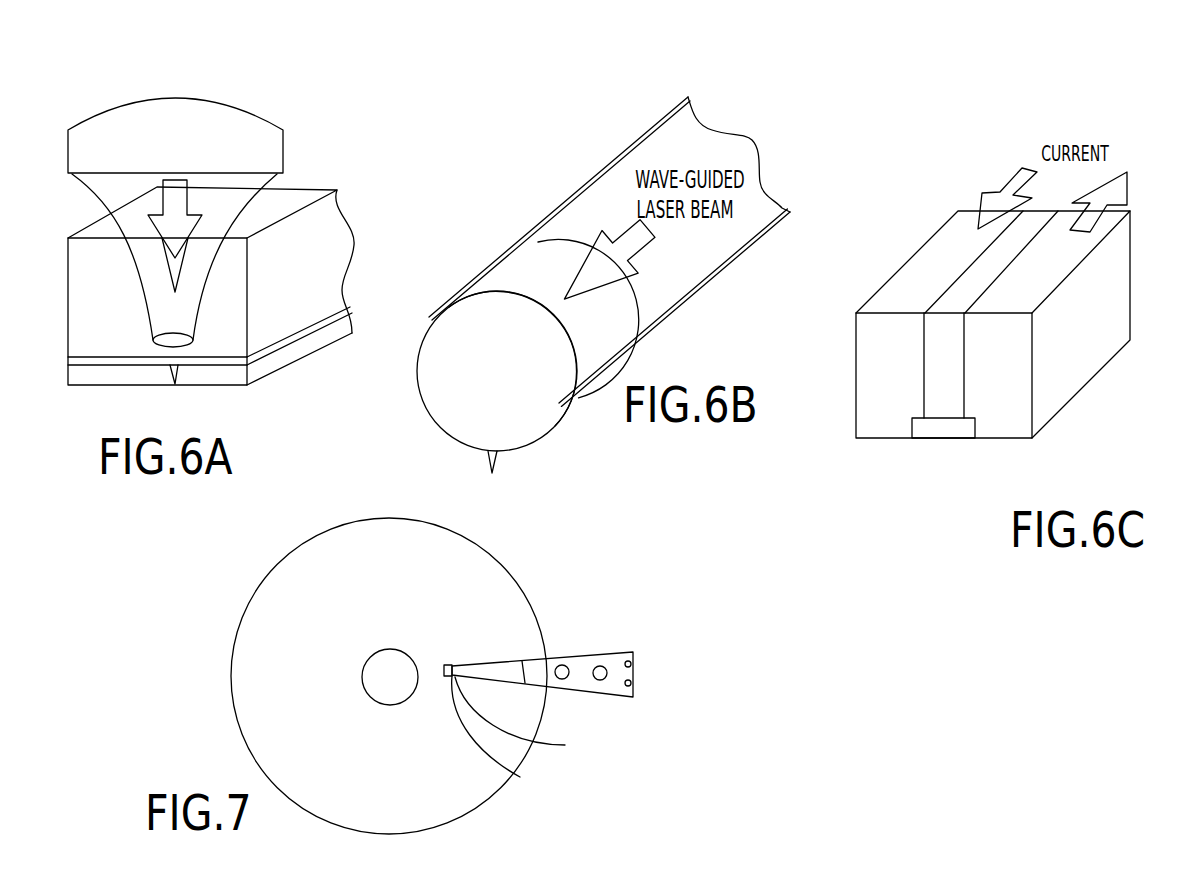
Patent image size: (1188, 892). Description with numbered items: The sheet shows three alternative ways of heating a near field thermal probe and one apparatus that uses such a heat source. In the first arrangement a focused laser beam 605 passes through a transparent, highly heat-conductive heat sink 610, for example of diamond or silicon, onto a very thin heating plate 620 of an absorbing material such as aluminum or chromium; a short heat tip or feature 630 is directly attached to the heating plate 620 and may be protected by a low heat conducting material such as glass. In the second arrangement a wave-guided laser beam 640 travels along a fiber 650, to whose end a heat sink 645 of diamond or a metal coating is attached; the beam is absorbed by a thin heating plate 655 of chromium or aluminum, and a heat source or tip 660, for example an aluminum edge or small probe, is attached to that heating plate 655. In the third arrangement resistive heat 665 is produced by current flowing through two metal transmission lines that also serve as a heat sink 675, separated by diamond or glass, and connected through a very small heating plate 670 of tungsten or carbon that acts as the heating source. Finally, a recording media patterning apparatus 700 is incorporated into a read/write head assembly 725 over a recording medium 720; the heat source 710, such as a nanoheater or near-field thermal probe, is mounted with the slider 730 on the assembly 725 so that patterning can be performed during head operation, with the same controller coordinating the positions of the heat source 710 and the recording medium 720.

In FIG. 6A, the focused laser beam 605 is at (177, 92).
In FIG. 6A, the heat sink 610 is at (98, 345).
In FIG. 6A, the heating plate 620 is at (338, 268).
In FIG. 6A, the heat tip or feature 630 is at (170, 373).
In FIG. 6B, the wave-guided laser beam 640 is at (688, 97).
In FIG. 6B, the heat sink 645 is at (541, 249).
In FIG. 6B, the fiber 650 is at (739, 154).
In FIG. 6B, the heating plate 655 is at (533, 427).
In FIG. 6B, the heat source or tip 660 is at (497, 458).
In FIG. 6C, the resistive heat 665 is at (1047, 131).
In FIG. 6C, the heating plate 670 is at (930, 444).
In FIG. 6C, the heat sink 675 is at (1070, 387).
In FIG. 7, the recording media patterning apparatus 700 is at (572, 831).
In FIG. 7, the heat source 710 is at (520, 777).
In FIG. 7, the recording medium 720 is at (389, 676).
In FIG. 7, the read/write head assembly 725 is at (583, 652).
In FIG. 7, the slider 730 is at (528, 717).